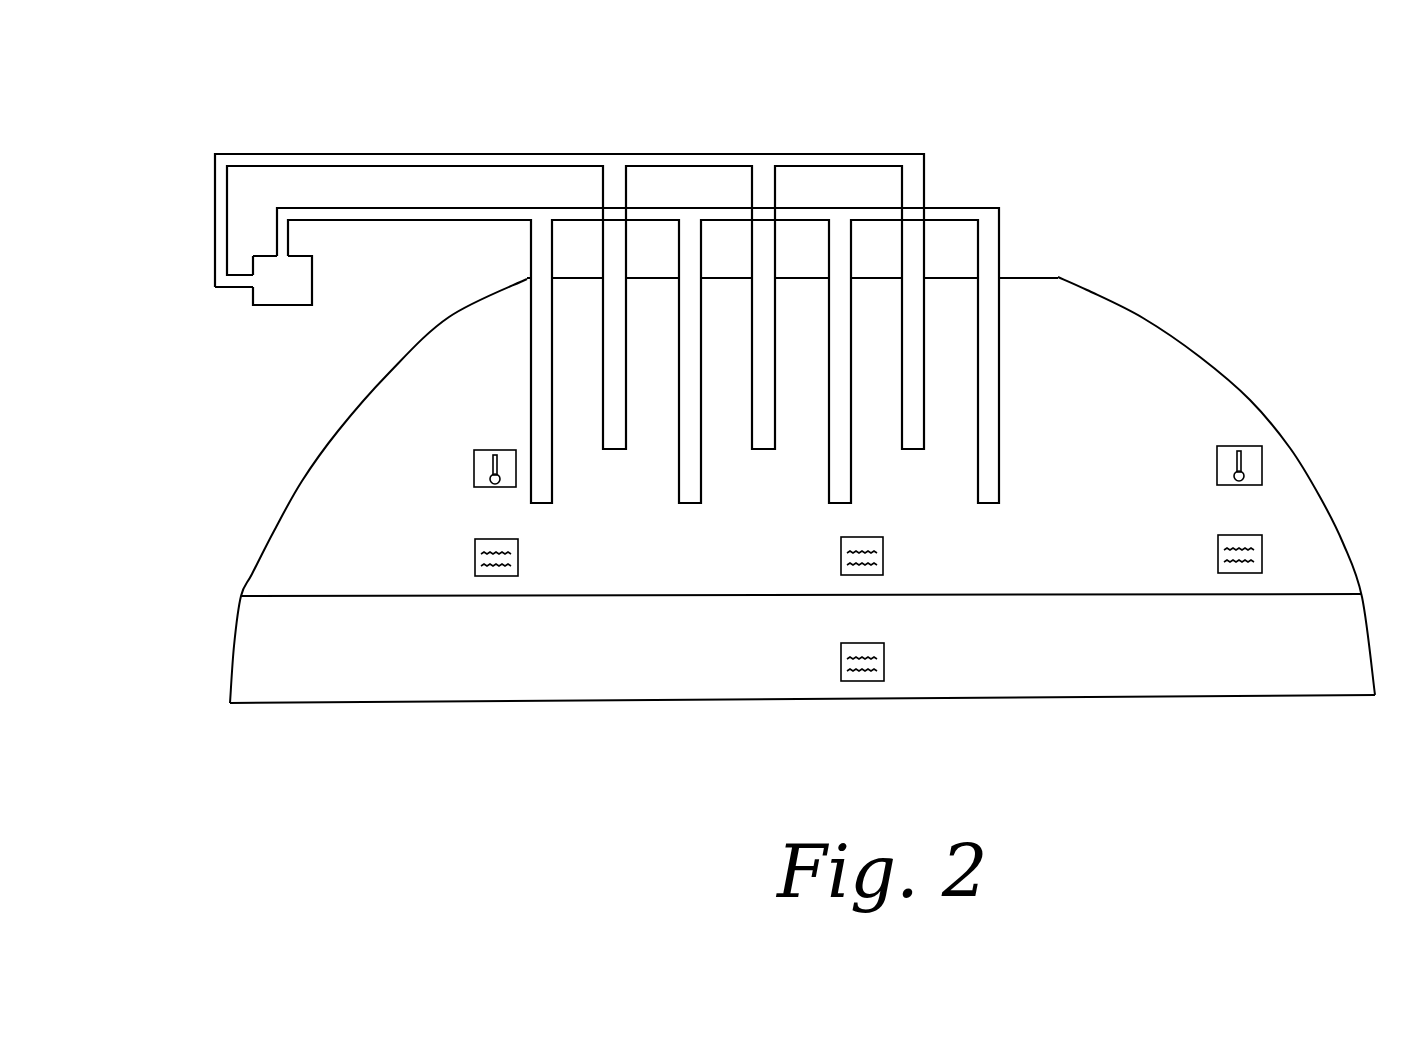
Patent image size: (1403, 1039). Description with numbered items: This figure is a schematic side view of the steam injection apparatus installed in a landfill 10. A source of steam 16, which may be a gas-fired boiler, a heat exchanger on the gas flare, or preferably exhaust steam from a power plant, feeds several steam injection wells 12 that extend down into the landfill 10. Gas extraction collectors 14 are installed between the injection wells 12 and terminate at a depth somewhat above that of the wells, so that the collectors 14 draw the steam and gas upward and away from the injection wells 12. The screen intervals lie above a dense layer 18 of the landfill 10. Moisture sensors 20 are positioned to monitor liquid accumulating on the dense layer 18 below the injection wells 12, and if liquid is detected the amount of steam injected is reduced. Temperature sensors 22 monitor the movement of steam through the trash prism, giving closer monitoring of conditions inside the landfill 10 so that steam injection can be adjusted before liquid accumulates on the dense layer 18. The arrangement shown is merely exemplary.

The landfill 10 is at (1115, 343).
The steam injection well 12 is at (540, 208).
The gas extraction collector 14 is at (613, 154).
The source of steam 16 is at (277, 288).
The dense layer 18 is at (1077, 593).
The moisture sensor 20 is at (518, 555).
The temperature sensor 22 is at (474, 470).